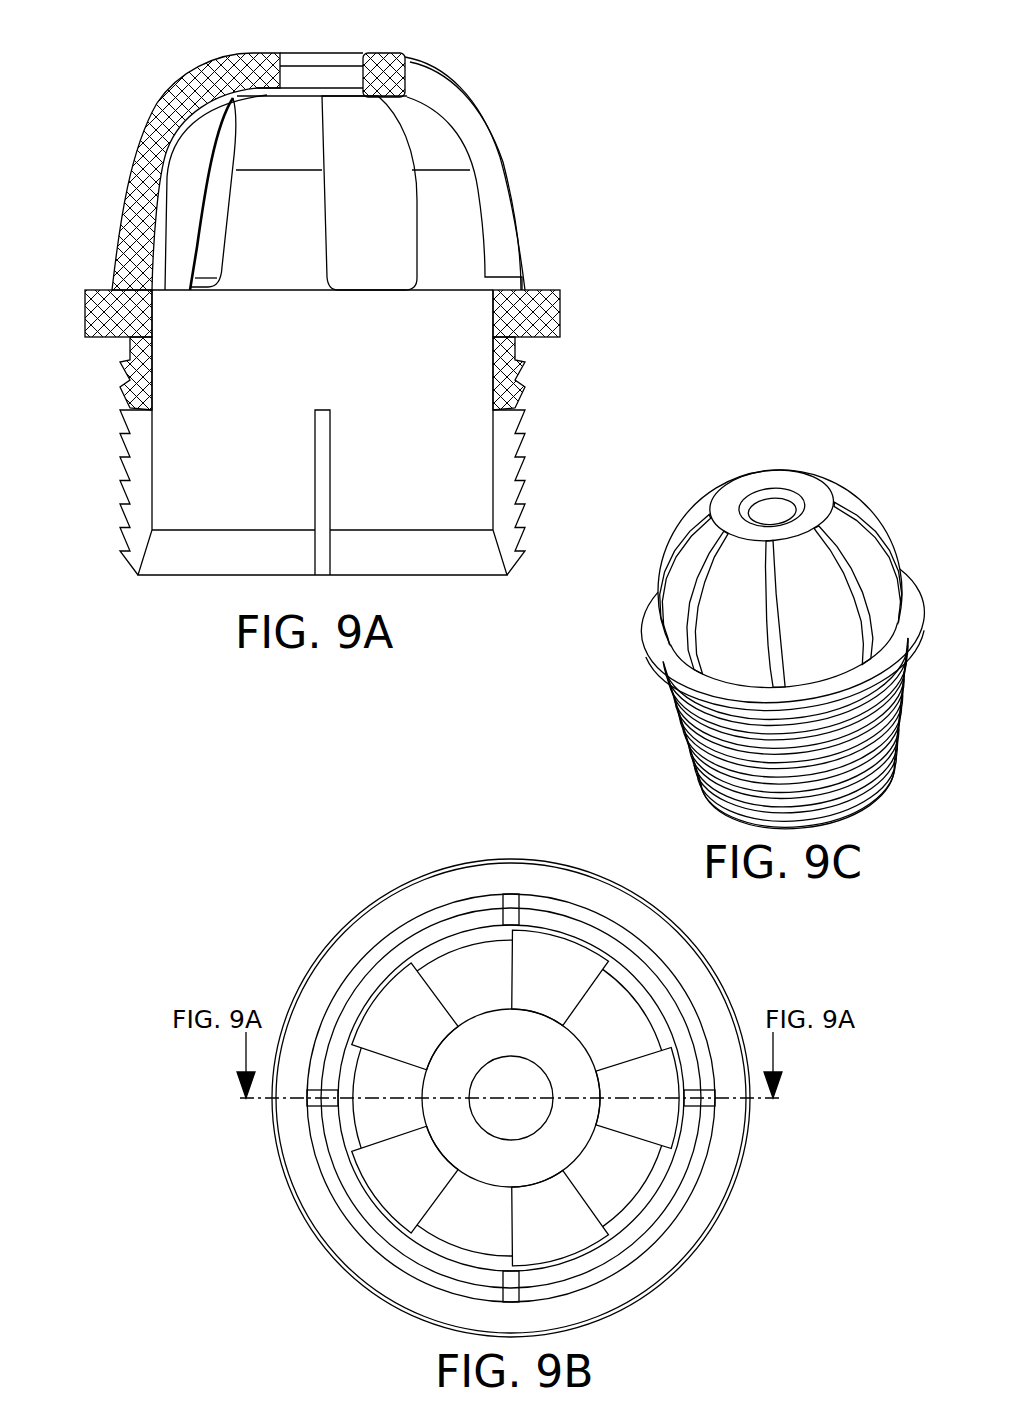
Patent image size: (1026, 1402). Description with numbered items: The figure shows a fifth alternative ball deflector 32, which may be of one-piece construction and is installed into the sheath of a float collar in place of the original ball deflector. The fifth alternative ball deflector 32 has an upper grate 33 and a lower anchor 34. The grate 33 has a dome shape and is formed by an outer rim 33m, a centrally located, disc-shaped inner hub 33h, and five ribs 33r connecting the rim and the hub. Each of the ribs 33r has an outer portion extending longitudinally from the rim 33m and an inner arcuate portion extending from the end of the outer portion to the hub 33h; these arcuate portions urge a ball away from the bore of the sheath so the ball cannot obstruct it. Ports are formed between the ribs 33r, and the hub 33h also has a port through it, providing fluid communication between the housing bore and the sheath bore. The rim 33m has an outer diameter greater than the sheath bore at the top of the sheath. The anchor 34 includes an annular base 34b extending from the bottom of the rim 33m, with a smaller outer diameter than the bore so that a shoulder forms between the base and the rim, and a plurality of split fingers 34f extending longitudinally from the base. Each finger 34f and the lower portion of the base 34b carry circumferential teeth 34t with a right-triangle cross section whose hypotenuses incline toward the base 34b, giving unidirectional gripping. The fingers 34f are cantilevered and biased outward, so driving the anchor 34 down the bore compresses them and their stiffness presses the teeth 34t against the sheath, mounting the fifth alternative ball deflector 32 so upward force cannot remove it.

In FIG. 9A, the fifth alternative ball deflector 32 is at (108, 59).
In FIG. 9C, the fifth alternative ball deflector 32 is at (897, 445).
In FIG. 9B, the fifth alternative ball deflector 32 is at (215, 888).
In FIG. 9A, the upper grate 33 is at (600, 53).
In FIG. 9A, the inner hub 33h is at (270, 53).
In FIG. 9C, the inner hub 33h is at (740, 490).
In FIG. 9B, the inner hub 33h is at (512, 1174).
In FIG. 9A, the ribs 33r is at (140, 140).
In FIG. 9C, the ribs 33r is at (672, 627).
In FIG. 9B, the ribs 33r is at (640, 1120).
In FIG. 9A, the outer rim 33m is at (92, 290).
In FIG. 9C, the outer rim 33m is at (650, 672).
In FIG. 9B, the outer rim 33m is at (407, 900).
In FIG. 9A, the lower anchor 34 is at (600, 337).
In FIG. 9A, the annular base 34b is at (497, 355).
In FIG. 9A, the split fingers 34f is at (421, 501).
In FIG. 9A, the circumferential teeth 34t is at (117, 553).
In FIG. 9C, the circumferential teeth 34t is at (672, 770).